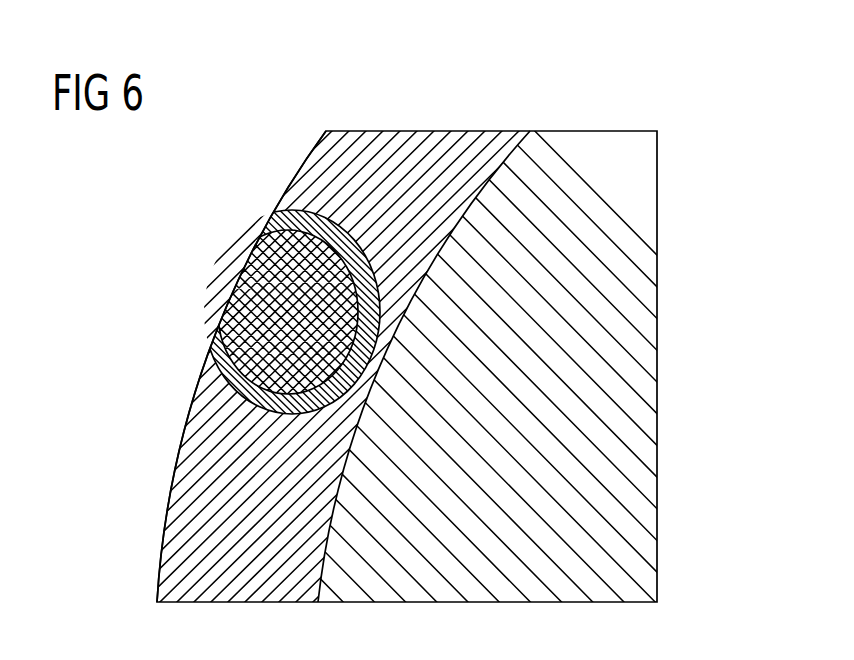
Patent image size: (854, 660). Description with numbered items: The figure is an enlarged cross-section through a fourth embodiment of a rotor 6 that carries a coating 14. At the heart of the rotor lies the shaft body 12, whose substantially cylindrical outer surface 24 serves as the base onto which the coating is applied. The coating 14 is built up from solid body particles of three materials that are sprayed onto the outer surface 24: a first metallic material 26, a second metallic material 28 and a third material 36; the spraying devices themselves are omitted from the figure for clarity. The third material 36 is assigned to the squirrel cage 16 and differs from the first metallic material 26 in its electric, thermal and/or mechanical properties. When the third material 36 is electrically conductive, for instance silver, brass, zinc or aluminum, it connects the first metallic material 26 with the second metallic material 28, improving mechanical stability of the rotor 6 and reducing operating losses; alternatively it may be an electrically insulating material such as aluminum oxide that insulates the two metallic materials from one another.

The rotor 6 is at (688, 293).
The shaft body 12 is at (647, 513).
The coating 14 is at (314, 170).
The squirrel cage 16 is at (243, 282).
The outer surface 24 is at (480, 186).
The first metallic material 26 is at (219, 334).
The second metallic material 28 is at (163, 552).
The third material 36 is at (212, 381).